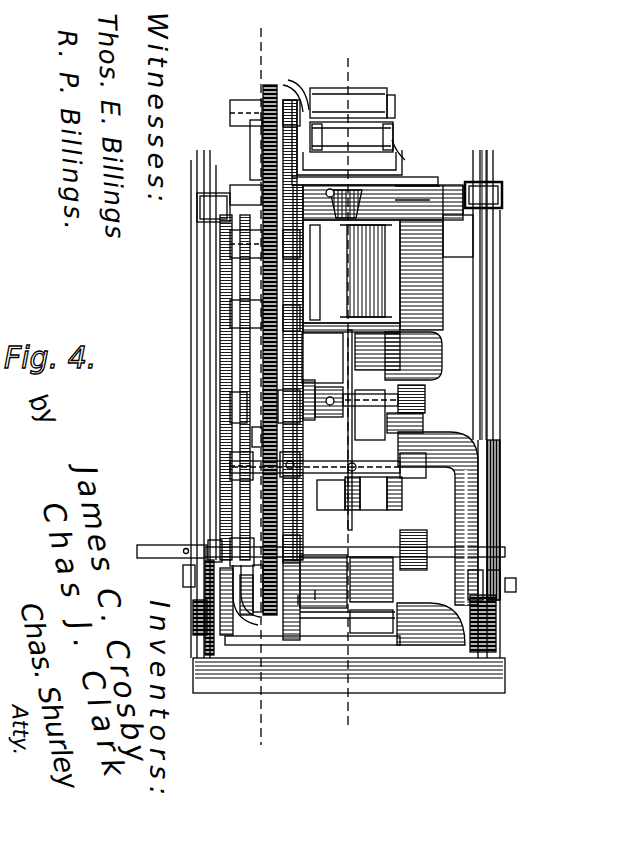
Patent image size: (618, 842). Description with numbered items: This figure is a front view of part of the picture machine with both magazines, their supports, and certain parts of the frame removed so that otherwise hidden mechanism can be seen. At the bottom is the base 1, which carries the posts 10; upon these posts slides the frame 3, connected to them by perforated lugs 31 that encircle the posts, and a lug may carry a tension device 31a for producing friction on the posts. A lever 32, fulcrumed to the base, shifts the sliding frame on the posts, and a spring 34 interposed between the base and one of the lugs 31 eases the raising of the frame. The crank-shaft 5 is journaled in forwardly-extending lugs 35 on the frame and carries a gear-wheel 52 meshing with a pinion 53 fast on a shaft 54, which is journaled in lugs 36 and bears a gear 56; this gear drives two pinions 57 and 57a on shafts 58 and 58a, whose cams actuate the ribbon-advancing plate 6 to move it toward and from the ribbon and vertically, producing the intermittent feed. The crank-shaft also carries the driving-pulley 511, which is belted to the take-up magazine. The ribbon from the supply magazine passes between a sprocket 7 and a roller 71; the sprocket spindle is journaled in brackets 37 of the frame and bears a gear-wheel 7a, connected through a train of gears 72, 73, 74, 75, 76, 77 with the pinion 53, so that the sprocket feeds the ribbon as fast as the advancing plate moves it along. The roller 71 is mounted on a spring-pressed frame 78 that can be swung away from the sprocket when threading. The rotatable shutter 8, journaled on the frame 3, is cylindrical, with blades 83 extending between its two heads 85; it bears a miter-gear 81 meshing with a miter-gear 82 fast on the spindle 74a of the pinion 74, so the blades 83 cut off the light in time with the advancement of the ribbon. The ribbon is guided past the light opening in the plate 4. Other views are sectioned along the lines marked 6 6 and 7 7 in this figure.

The base 1 is at (507, 672).
The sliding frame 3 is at (410, 300).
The plate 4 is at (495, 370).
The crank-shaft 5 is at (152, 545).
The driving-pulley 511 is at (213, 527).
The ribbon-advancing plate 6 is at (556, 344).
The sprocket 7 is at (354, 393).
The gear-wheel 7a is at (280, 87).
The rotatable shutter 8 is at (501, 255).
The posts 10 is at (210, 415).
The perforated lugs 31 is at (500, 601).
The tension device 31a is at (516, 585).
The lever 32 is at (190, 576).
The spring 34 is at (498, 627).
The lugs 35 is at (450, 550).
The lugs 36 is at (240, 470).
The brackets 37 is at (238, 100).
The gear-wheel 52 is at (300, 600).
The pinion 53 is at (237, 462).
The shaft 54 is at (371, 540).
The gear 56 is at (308, 497).
The pinion 57 is at (310, 383).
The pinion 57a is at (318, 600).
The shaft 58 is at (373, 406).
The shaft 58a is at (479, 512).
The roller 71 is at (365, 136).
The gear 72 is at (262, 160).
The gear 73 is at (200, 200).
The pinion 74 is at (240, 240).
The spindle 74a is at (310, 195).
The gear 75 is at (262, 250).
The gear 76 is at (263, 330).
The gear 77 is at (222, 378).
The frame 78 is at (393, 146).
The miter-gear 81 is at (405, 205).
The miter-gear 82 is at (396, 190).
The blades 83 is at (380, 276).
The heads 85 is at (440, 192).